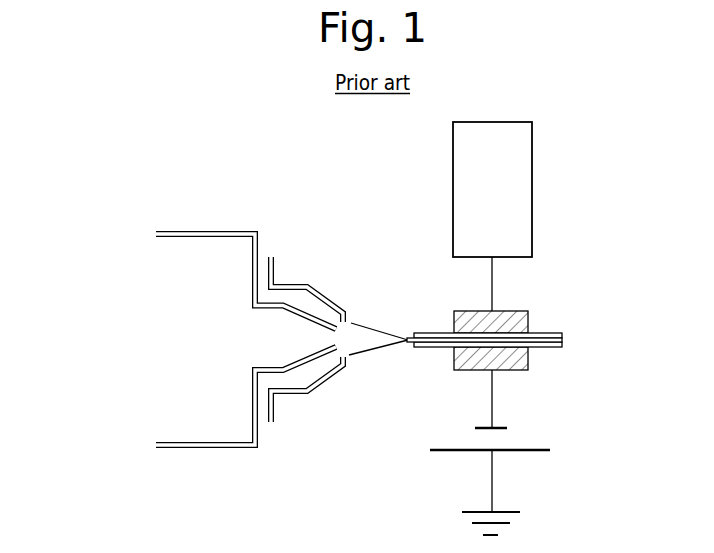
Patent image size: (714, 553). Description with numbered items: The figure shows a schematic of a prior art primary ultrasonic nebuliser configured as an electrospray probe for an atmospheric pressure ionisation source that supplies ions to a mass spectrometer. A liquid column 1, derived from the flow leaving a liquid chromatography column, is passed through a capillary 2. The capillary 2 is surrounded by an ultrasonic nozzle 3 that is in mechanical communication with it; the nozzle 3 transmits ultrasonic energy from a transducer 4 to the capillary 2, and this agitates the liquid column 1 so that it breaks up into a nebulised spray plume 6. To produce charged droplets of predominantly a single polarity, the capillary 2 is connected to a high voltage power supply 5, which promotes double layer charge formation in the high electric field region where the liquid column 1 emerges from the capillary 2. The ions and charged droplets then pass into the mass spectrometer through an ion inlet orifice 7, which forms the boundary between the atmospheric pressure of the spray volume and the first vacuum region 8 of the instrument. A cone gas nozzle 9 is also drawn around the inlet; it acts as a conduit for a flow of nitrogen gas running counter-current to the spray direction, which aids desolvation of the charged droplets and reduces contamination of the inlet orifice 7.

The liquid column 1 is at (407, 345).
The capillary 2 is at (552, 347).
The ultrasonic nozzle 3 is at (515, 310).
The transducer 4 is at (532, 167).
The high voltage power supply 5 is at (520, 451).
The nebulised spray plume 6 is at (382, 333).
The ion inlet orifice 7 is at (333, 339).
The first vacuum region 8 is at (183, 267).
The cone gas nozzle 9 is at (327, 296).